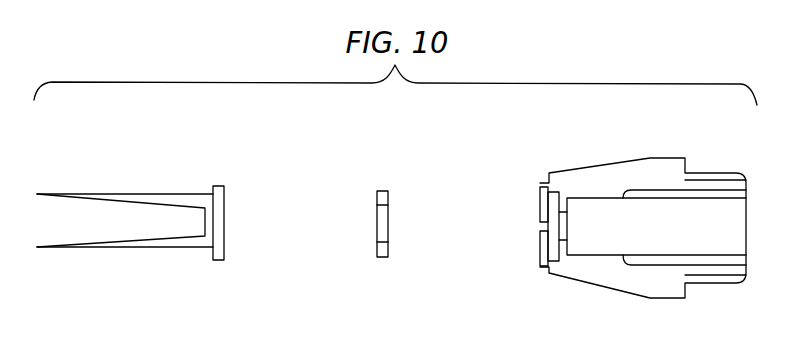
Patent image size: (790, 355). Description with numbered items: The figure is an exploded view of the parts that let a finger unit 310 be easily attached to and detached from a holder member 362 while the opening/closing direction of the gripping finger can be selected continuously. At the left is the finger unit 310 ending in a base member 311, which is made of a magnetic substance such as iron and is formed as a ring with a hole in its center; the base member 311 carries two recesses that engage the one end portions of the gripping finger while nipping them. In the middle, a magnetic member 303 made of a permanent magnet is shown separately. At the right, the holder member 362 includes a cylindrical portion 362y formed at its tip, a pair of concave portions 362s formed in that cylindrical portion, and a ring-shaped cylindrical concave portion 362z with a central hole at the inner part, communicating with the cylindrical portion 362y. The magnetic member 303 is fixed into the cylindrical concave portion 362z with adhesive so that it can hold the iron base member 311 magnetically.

The finger unit 310 is at (106, 193).
The base member 311 is at (218, 186).
The magnetic member 303 is at (383, 190).
The holder member 362 is at (669, 157).
The concave portions 362s is at (541, 227).
The cylindrical portion 362y is at (545, 186).
The cylindrical concave portion 362z is at (557, 262).